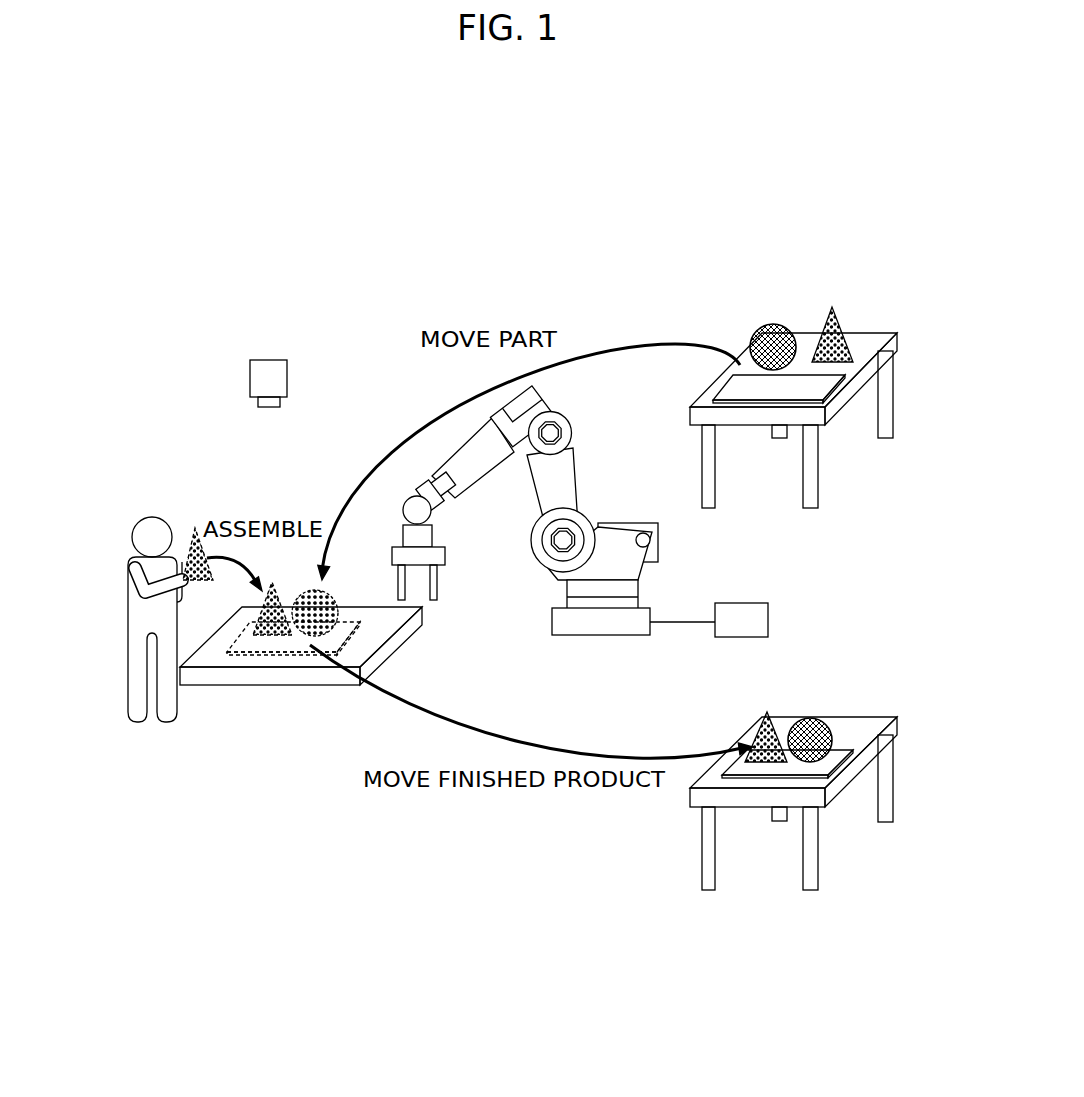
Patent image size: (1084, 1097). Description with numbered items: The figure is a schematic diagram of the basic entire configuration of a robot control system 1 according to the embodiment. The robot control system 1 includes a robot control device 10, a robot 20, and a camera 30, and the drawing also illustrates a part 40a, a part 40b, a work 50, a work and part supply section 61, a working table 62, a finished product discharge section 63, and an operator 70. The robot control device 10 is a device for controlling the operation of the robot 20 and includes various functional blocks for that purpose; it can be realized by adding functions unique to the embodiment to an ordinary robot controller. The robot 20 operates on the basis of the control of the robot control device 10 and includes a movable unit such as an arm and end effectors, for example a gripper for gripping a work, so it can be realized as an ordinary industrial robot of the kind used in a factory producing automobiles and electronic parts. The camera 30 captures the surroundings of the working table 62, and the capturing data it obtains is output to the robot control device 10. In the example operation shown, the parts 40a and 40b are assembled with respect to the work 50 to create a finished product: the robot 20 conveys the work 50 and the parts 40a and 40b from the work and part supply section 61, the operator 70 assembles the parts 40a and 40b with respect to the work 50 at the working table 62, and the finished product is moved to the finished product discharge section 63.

The robot control system 1 is at (346, 170).
The robot control device 10 is at (731, 603).
The robot 20 is at (542, 567).
The camera 30 is at (260, 360).
The part 40a is at (830, 306).
The part 40b is at (773, 323).
The work 50 is at (840, 390).
The work and part supply section 61 is at (767, 257).
The working table 62 is at (277, 685).
The finished product discharge section 63 is at (743, 888).
The operator 70 is at (143, 722).